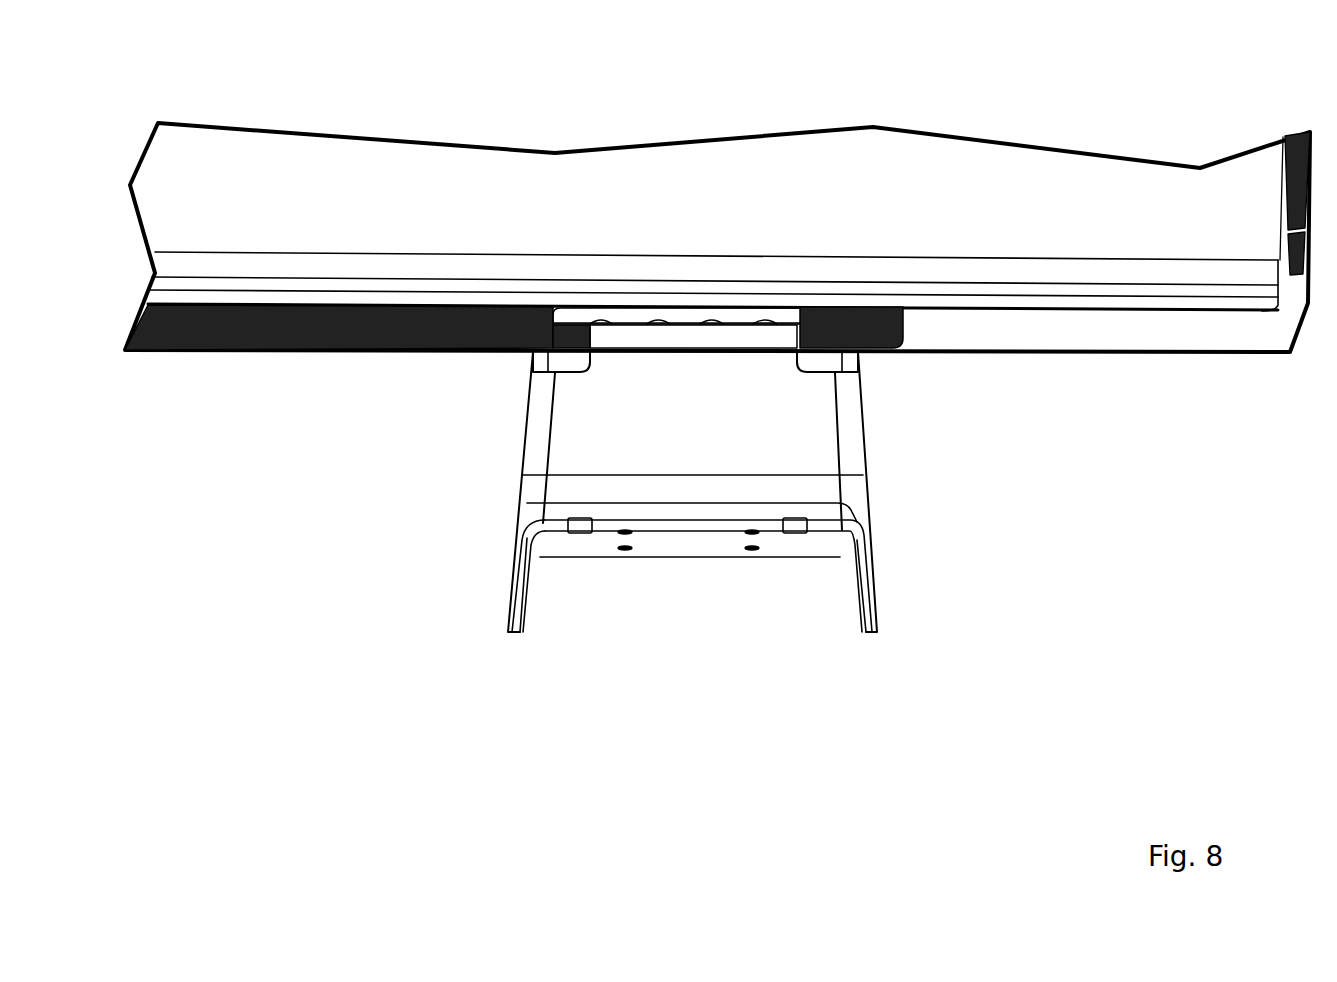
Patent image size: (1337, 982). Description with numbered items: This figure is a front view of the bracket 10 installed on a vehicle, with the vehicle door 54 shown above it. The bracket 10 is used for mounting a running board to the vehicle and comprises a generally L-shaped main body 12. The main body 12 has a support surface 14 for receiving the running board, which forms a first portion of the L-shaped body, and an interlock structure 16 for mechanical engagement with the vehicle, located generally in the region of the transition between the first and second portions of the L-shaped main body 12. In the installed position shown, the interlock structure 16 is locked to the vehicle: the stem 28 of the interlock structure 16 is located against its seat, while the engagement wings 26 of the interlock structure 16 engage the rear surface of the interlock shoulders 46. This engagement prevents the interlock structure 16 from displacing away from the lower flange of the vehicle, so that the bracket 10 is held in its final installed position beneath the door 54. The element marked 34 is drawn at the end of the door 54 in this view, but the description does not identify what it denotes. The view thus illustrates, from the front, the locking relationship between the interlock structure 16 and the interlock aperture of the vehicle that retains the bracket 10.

The bracket 10 is at (370, 610).
The main body 12 is at (868, 503).
The support surface 14 is at (593, 507).
The interlock structure 16 is at (642, 338).
The engagement wings 26 is at (575, 323).
The stem 28 is at (624, 338).
The end seal 34 is at (1292, 137).
The interlock shoulders 46 is at (813, 337).
The door 54 is at (355, 145).